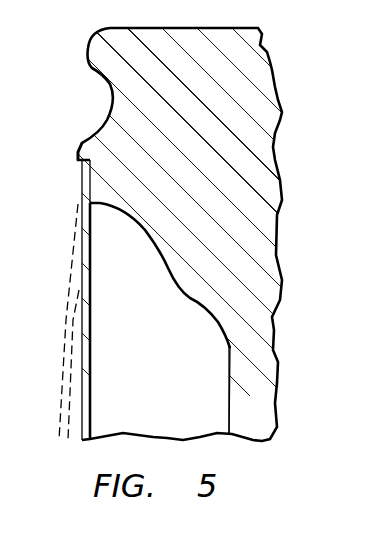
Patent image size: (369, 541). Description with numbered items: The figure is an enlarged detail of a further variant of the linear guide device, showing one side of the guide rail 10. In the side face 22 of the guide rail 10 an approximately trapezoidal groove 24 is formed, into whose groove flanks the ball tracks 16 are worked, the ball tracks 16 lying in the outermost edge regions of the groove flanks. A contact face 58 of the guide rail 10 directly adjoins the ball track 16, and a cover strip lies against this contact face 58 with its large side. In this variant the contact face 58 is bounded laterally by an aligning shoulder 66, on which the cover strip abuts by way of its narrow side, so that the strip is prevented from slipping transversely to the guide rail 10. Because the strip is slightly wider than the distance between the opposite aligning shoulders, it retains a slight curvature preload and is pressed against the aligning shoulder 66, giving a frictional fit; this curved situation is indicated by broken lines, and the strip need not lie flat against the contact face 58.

The guide rail 10 is at (268, 256).
The ball track 16 is at (158, 257).
The side face 22 is at (238, 388).
The trapezoidal groove 24 is at (110, 353).
The contact face 58 is at (92, 192).
The aligning shoulder 66 is at (83, 147).